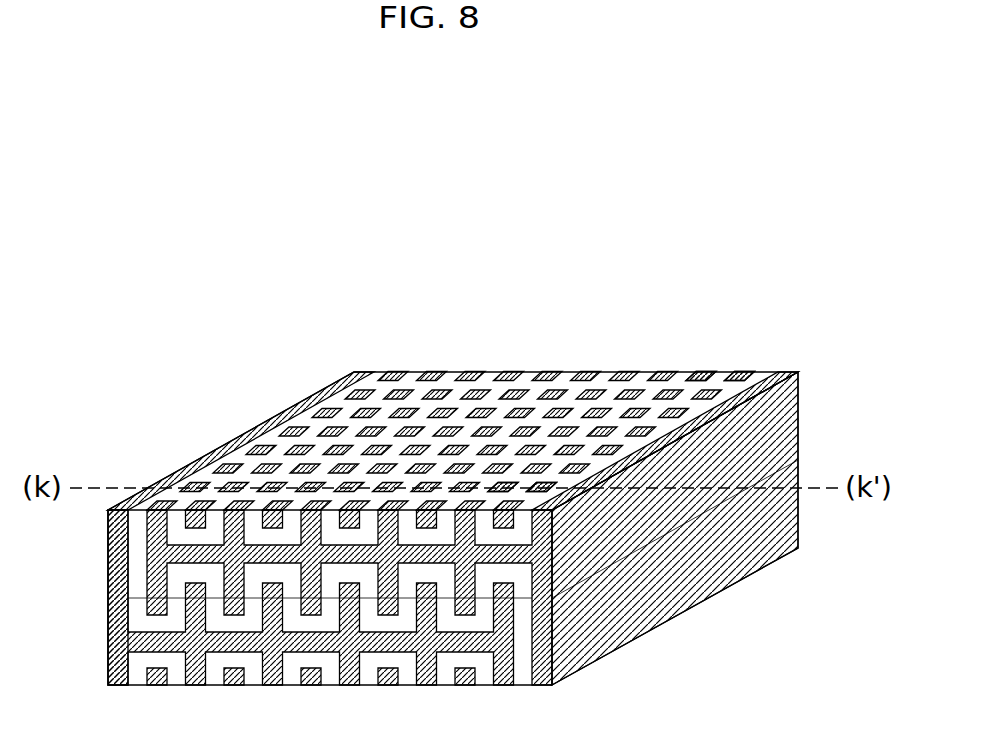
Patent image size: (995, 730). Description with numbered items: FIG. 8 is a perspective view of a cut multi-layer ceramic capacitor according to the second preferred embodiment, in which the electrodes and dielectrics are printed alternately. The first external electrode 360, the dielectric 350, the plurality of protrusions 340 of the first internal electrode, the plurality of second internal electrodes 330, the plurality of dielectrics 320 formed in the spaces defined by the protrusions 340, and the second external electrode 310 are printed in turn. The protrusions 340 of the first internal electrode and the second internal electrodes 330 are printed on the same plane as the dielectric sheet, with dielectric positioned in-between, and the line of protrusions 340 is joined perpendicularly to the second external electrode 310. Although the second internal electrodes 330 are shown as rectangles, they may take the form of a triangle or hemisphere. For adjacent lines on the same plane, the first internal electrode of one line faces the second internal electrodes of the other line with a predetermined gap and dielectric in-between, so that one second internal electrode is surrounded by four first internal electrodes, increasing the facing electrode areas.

The second external electrode 310 is at (783, 372).
The dielectrics 320 is at (598, 487).
The second internal electrodes 330 is at (513, 513).
The protrusions of the first internal electrode 340 is at (476, 505).
The dielectric 350 is at (143, 502).
The first external electrode 360 is at (273, 423).